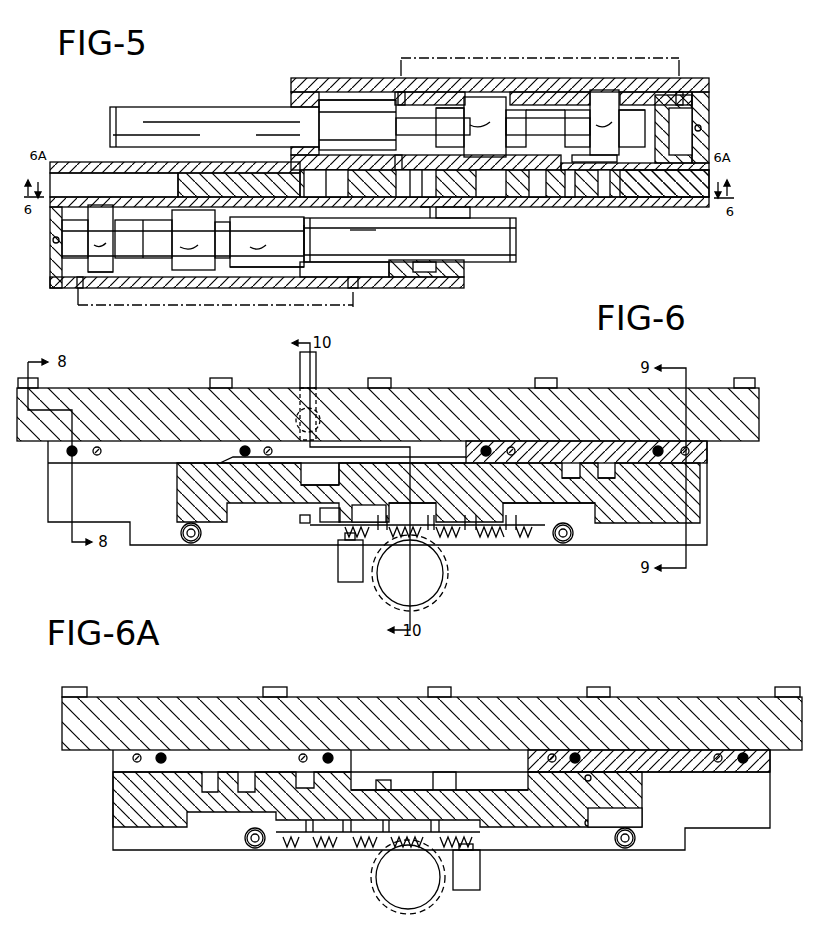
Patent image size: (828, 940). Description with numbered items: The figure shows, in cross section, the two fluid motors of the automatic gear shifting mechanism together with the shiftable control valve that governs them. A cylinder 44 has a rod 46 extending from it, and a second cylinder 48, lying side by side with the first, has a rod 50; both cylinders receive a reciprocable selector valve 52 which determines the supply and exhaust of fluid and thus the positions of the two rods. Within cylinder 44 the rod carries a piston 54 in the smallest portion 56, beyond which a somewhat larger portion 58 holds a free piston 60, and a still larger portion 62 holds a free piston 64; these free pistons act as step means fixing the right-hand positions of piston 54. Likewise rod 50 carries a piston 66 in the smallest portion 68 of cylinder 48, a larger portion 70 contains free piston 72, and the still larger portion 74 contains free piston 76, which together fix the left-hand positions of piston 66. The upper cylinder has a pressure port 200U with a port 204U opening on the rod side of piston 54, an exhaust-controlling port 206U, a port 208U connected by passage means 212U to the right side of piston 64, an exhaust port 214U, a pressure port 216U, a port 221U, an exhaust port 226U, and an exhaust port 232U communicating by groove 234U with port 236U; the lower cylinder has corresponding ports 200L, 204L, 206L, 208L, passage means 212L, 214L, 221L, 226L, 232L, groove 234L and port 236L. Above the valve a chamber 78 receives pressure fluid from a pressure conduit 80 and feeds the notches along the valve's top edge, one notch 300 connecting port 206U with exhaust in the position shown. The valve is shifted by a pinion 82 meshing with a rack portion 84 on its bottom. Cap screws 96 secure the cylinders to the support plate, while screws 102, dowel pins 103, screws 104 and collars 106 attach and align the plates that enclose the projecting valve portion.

In FIG. 5, the cylinder 44 is at (701, 80).
In FIG. 5, the rod 46 is at (186, 118).
In FIG. 5, the cylinder 48 is at (436, 290).
In FIG. 5, the rod 50 is at (517, 246).
In FIG. 5, the selector valve 52 is at (672, 198).
In FIG. 6, the selector valve 52 is at (703, 505).
In FIG. 6A, the selector valve 52 is at (392, 799).
In FIG. 5, the piston 54 is at (352, 110).
In FIG. 5, the smallest portion 56 is at (440, 105).
In FIG. 5, the larger portion 58 is at (540, 110).
In FIG. 5, the free piston 60 is at (485, 127).
In FIG. 5, the still larger portion 62 is at (650, 92).
In FIG. 5, the free piston 64 is at (605, 122).
In FIG. 5, the piston 66 is at (259, 242).
In FIG. 5, the smallest portion 68 is at (374, 290).
In FIG. 5, the larger portion 70 is at (252, 273).
In FIG. 5, the free piston 72 is at (165, 240).
In FIG. 5, the still larger portion 74 is at (146, 277).
In FIG. 5, the free piston 76 is at (87, 238).
In FIG. 6, the chamber 78 is at (440, 447).
In FIG. 6A, the chamber 78 is at (447, 767).
In FIG. 6, the pressure conduit 80 is at (324, 396).
In FIG. 6, the pinion 82 is at (444, 585).
In FIG. 6A, the pinion 82 is at (438, 908).
In FIG. 6, the rack portion 84 is at (338, 541).
In FIG. 6A, the rack portion 84 is at (484, 861).
In FIG. 6, the cap screws 96 is at (550, 384).
In FIG. 6A, the cap screws 96 is at (86, 690).
In FIG. 6, the screws 102 is at (486, 446).
In FIG. 6A, the screws 102 is at (164, 752).
In FIG. 6, the dowel pins 103 is at (512, 447).
In FIG. 6A, the dowel pins 103 is at (137, 752).
In FIG. 6, the screws 104 is at (188, 541).
In FIG. 6A, the screws 104 is at (260, 847).
In FIG. 6, the collars 106 is at (200, 541).
In FIG. 6A, the collars 106 is at (250, 847).
In FIG. 5, the pressure port 200U is at (357, 125).
In FIG. 6, the pressure port 200U is at (336, 483).
In FIG. 5, the pressure port 200L is at (425, 207).
In FIG. 6A, the pressure port 200L is at (414, 776).
In FIG. 5, the port 204U is at (206, 133).
In FIG. 5, the port 204L is at (470, 213).
In FIG. 6, the port 206U is at (312, 515).
In FIG. 6A, the port 206L is at (412, 813).
In FIG. 5, the port 208U is at (433, 127).
In FIG. 6, the port 208U is at (403, 485).
In FIG. 5, the port 208L is at (380, 207).
In FIG. 6A, the port 208L is at (462, 778).
In FIG. 5, the passage means 212U is at (512, 58).
In FIG. 5, the passage means 212L is at (192, 305).
In FIG. 6, the port 214U is at (405, 520).
In FIG. 6A, the port 214L is at (478, 821).
In FIG. 6, the pressure port 216U is at (552, 518).
In FIG. 6, the port 221U is at (553, 458).
In FIG. 6A, the port 221L is at (590, 772).
In FIG. 6, the exhaust port 226U is at (520, 532).
In FIG. 6A, the exhaust port 226L is at (590, 781).
In FIG. 5, the exhaust port 232U is at (548, 128).
In FIG. 6, the exhaust port 232U is at (528, 510).
In FIG. 5, the exhaust port 232L is at (296, 236).
In FIG. 6A, the exhaust port 232L is at (594, 816).
In FIG. 5, the groove 234U is at (580, 200).
In FIG. 5, the groove 234L is at (240, 205).
In FIG. 5, the port 236U is at (617, 157).
In FIG. 5, the port 236L is at (184, 192).
In FIG. 6, the notch 300 is at (306, 521).